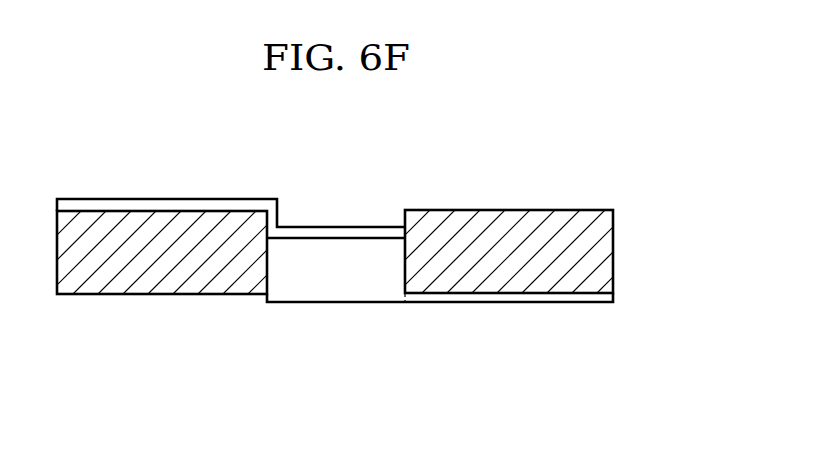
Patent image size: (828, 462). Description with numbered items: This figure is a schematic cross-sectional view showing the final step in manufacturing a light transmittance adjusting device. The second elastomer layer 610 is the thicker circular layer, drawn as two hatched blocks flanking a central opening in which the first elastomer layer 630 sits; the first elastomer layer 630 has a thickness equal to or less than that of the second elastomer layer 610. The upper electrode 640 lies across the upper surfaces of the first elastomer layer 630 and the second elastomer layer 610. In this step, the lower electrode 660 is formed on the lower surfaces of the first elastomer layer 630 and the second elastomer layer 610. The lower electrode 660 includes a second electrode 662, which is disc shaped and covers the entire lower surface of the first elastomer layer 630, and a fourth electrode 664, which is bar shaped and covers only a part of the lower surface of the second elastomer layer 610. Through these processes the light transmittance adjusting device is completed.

The second elastomer layer 610 is at (614, 253).
The first elastomer layer 630 is at (333, 248).
The upper electrode 640 is at (172, 203).
The lower electrode 660 is at (440, 353).
The second electrode 662 is at (352, 303).
The fourth electrode 664 is at (509, 331).